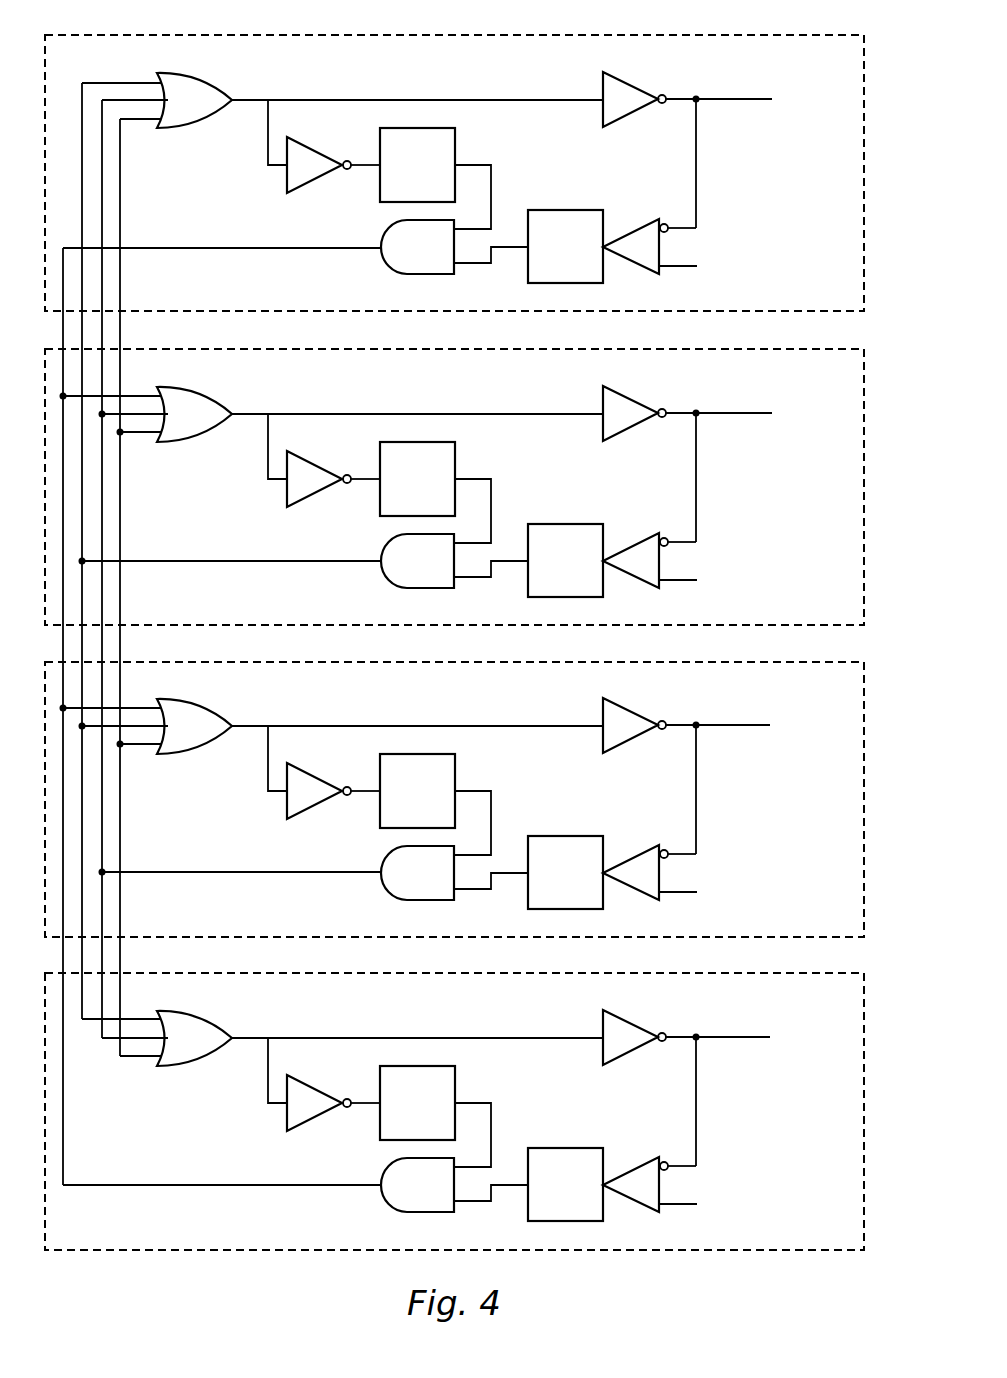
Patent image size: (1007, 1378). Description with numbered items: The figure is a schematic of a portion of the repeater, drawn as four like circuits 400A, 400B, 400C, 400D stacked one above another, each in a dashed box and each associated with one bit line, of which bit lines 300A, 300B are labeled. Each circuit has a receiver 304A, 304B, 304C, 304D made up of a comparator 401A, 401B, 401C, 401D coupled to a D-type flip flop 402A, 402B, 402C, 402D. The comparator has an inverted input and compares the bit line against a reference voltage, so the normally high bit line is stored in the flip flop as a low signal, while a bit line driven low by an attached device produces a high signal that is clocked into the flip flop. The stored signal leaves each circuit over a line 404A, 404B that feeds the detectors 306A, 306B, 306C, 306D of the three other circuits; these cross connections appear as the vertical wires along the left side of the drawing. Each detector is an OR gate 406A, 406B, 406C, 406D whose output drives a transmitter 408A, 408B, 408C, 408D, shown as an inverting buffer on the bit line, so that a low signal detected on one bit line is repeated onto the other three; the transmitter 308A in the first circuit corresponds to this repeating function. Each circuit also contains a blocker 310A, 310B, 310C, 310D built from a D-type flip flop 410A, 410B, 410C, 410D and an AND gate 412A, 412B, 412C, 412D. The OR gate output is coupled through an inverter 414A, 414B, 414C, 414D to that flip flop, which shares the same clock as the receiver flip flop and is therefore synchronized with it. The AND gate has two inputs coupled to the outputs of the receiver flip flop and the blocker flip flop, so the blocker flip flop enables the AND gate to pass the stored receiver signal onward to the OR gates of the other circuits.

The bit line 300A is at (735, 98).
The bit line 300B is at (741, 458).
The receiver 304A is at (756, 275).
The receiver 304B is at (807, 601).
The receiver 304C is at (807, 913).
The receiver 304D is at (807, 1225).
The detector 306A is at (184, 56).
The detector 306B is at (136, 375).
The detector 306C is at (136, 687).
The detector 306D is at (128, 1079).
The transmitter 308A is at (642, 75).
The blocker 310A is at (358, 202).
The blocker 310B is at (381, 511).
The blocker 310C is at (381, 823).
The blocker 310D is at (381, 1135).
The circuit 400A is at (452, 36).
The circuit 400B is at (454, 487).
The circuit 400C is at (454, 799).
The circuit 400D is at (454, 1111).
The comparator 401A is at (637, 228).
The comparator 401B is at (672, 541).
The comparator 401C is at (672, 853).
The comparator 401D is at (672, 1165).
The D-type flip flop 402A is at (565, 246).
The D-type flip flop 402B is at (565, 560).
The D-type flip flop 402C is at (565, 872).
The D-type flip flop 402D is at (565, 1184).
The line 404A is at (305, 249).
The line 404B is at (231, 579).
The OR gate 406A is at (194, 100).
The OR gate 406B is at (194, 414).
The OR gate 406C is at (194, 726).
The OR gate 406D is at (194, 1038).
The transmitter 408A is at (603, 117).
The transmitter 408B is at (593, 416).
The transmitter 408C is at (593, 728).
The transmitter 408D is at (593, 1040).
The D-type flip flop 410A is at (417, 165).
The D-type flip flop 410B is at (417, 479).
The D-type flip flop 410C is at (417, 791).
The D-type flip flop 410D is at (417, 1103).
The AND gate 412A is at (417, 247).
The AND gate 412B is at (417, 561).
The AND gate 412C is at (417, 873).
The AND gate 412D is at (417, 1185).
The inverter 414A is at (287, 185).
The inverter 414B is at (291, 482).
The inverter 414C is at (291, 794).
The inverter 414D is at (291, 1106).